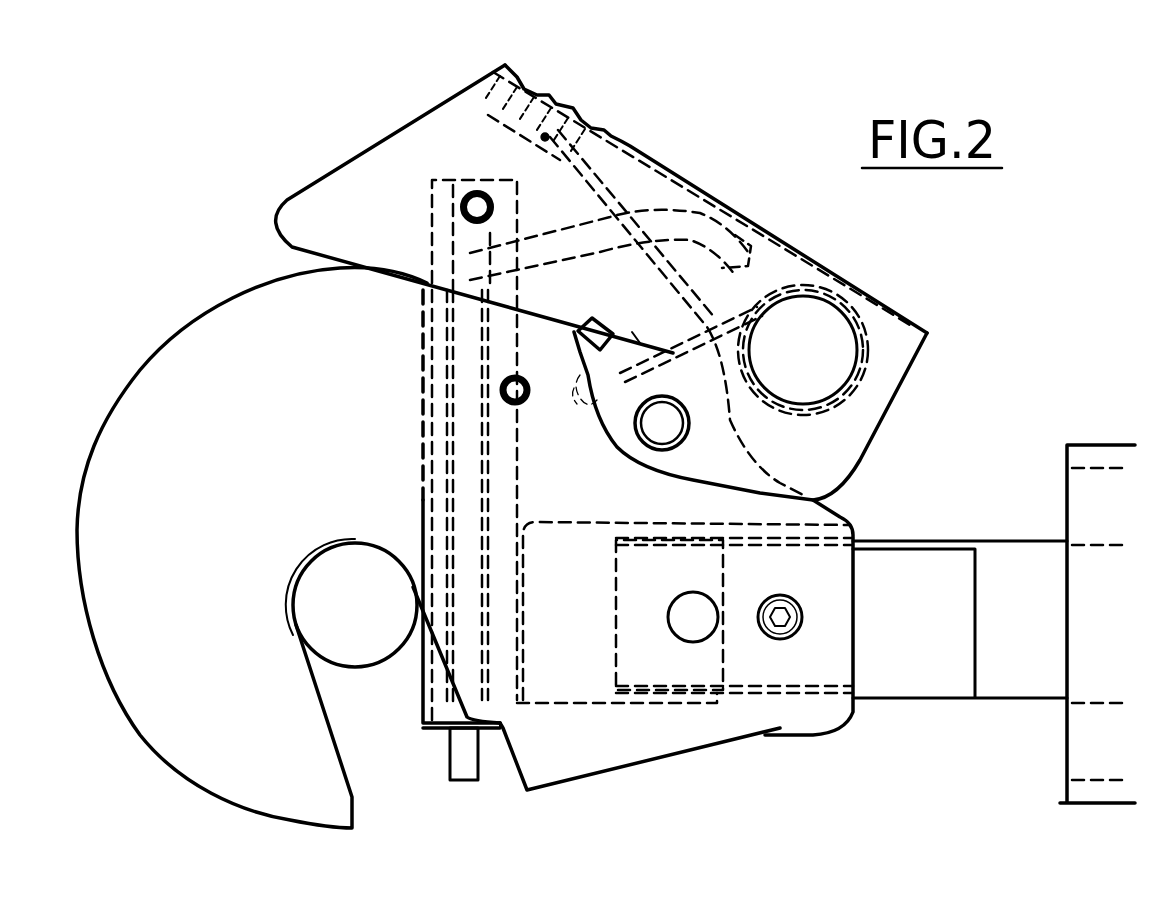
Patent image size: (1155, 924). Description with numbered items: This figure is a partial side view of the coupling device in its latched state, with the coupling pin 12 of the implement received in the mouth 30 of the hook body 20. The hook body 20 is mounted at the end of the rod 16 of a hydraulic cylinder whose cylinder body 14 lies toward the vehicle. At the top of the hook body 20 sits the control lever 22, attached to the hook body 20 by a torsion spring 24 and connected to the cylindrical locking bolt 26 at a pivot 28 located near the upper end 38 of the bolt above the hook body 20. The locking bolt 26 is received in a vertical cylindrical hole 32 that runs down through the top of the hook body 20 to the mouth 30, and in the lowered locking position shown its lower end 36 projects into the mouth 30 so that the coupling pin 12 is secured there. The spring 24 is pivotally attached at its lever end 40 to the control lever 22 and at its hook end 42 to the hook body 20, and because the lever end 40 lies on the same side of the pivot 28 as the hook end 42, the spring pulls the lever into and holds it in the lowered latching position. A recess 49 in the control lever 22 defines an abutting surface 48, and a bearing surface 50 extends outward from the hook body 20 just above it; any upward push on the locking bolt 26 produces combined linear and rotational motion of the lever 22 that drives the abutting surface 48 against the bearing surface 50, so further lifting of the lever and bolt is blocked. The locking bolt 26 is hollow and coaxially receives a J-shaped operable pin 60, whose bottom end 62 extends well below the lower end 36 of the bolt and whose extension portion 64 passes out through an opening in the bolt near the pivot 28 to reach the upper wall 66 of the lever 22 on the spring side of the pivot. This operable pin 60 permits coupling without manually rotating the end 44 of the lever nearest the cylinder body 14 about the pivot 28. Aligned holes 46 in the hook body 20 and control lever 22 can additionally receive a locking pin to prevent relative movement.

The coupling pin 12 is at (357, 652).
The cylinder body 14 is at (1095, 650).
The rod 16 is at (988, 660).
The hook body 20 is at (828, 705).
The control lever 22 is at (843, 275).
The torsion spring 24 is at (860, 370).
The locking bolt 26 is at (440, 388).
The pivot 28 is at (462, 192).
The mouth 30 is at (377, 798).
The vertical cylindrical hole 32 is at (425, 320).
The lower end 36 is at (435, 732).
The upper end 38 is at (453, 180).
The lever end 40 is at (548, 134).
The hook end 42 is at (583, 400).
The end of the lever 44 is at (872, 404).
The aligned holes 46 is at (673, 423).
The abutting surface 48 is at (639, 351).
The recess 49 is at (608, 331).
The bearing surface 50 is at (596, 322).
The operable pin 60 is at (465, 475).
The bottom end 62 is at (468, 770).
The extension portion 64 is at (680, 215).
The upper wall 66 is at (738, 218).